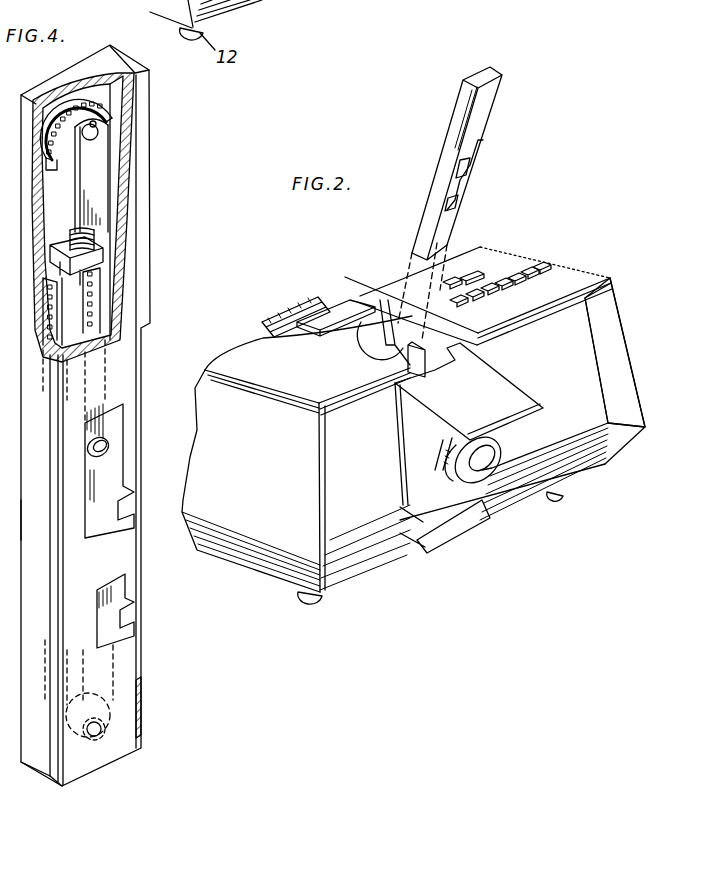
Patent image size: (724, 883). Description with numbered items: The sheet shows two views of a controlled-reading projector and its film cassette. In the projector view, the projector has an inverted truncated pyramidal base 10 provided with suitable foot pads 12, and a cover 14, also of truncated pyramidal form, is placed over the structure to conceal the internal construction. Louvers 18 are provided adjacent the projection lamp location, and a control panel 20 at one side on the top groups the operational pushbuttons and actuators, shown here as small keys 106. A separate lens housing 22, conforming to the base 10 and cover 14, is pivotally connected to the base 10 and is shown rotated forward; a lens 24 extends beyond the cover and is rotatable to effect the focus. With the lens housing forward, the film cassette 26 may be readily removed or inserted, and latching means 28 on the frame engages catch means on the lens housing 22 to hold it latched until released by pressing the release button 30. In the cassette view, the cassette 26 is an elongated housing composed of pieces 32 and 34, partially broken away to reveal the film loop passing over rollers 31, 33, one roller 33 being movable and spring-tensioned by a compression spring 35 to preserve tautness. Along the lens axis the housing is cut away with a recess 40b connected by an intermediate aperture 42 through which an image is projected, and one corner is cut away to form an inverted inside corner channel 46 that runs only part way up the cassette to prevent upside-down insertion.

In FIG. 2, the base 10 is at (602, 460).
In FIG. 2, the foot pads 12 is at (310, 603).
In FIG. 2, the cover 14 is at (615, 337).
In FIG. 2, the louvers 18 is at (300, 315).
In FIG. 2, the control panel 20 is at (524, 272).
In FIG. 2, the lens housing 22 is at (455, 530).
In FIG. 2, the lens 24 is at (500, 442).
In FIG. 4, the film cassette 26 is at (145, 105).
In FIG. 2, the film cassette 26 is at (487, 108).
In FIG. 2, the latching means 28 is at (388, 318).
In FIG. 2, the release button 30 is at (295, 327).
In FIG. 4, the roller 31 is at (85, 742).
In FIG. 4, the housing piece 32 is at (30, 516).
In FIG. 4, the roller 33 is at (96, 123).
In FIG. 4, the housing piece 34 is at (143, 171).
In FIG. 4, the compression spring 35 is at (97, 233).
In FIG. 4, the recess 40b is at (110, 412).
In FIG. 4, the aperture 42 is at (100, 458).
In FIG. 4, the inside corner channel 46 is at (143, 702).
In FIG. 2, the buttons 106 is at (545, 272).